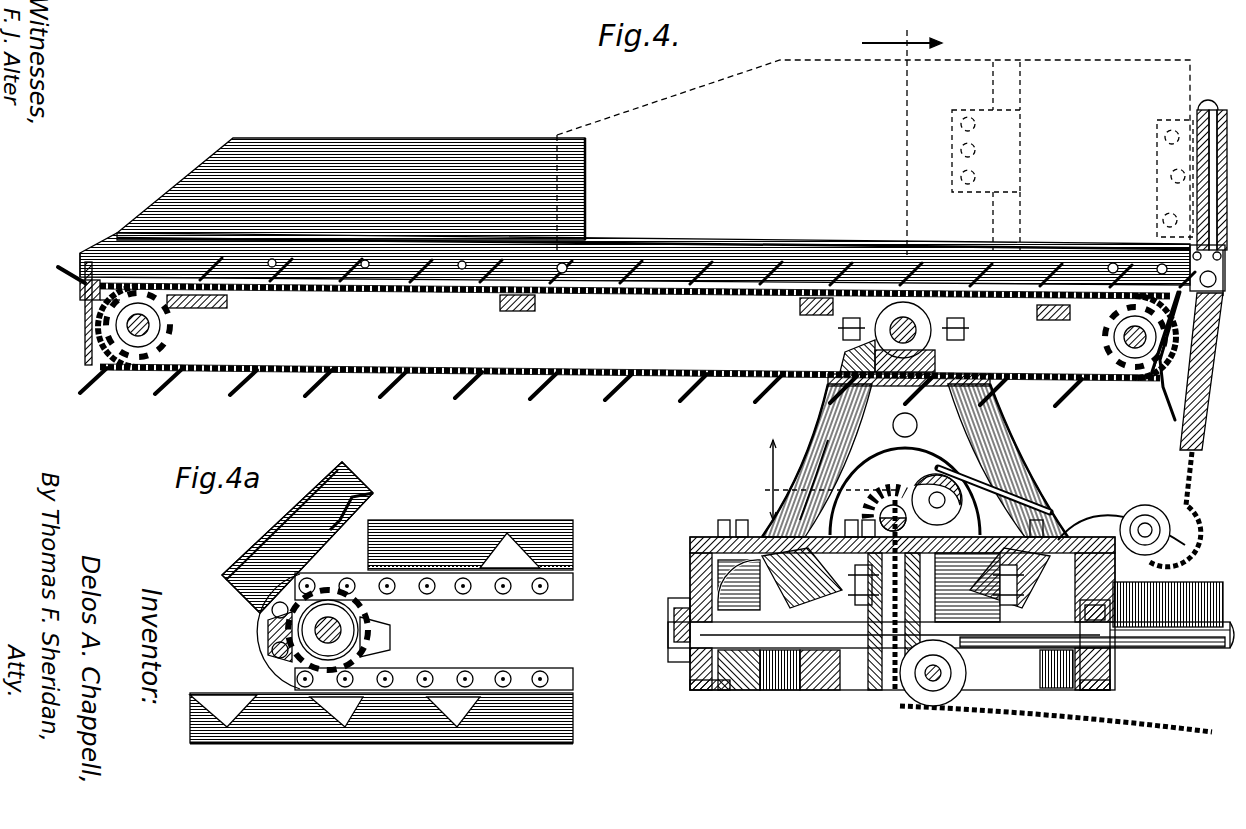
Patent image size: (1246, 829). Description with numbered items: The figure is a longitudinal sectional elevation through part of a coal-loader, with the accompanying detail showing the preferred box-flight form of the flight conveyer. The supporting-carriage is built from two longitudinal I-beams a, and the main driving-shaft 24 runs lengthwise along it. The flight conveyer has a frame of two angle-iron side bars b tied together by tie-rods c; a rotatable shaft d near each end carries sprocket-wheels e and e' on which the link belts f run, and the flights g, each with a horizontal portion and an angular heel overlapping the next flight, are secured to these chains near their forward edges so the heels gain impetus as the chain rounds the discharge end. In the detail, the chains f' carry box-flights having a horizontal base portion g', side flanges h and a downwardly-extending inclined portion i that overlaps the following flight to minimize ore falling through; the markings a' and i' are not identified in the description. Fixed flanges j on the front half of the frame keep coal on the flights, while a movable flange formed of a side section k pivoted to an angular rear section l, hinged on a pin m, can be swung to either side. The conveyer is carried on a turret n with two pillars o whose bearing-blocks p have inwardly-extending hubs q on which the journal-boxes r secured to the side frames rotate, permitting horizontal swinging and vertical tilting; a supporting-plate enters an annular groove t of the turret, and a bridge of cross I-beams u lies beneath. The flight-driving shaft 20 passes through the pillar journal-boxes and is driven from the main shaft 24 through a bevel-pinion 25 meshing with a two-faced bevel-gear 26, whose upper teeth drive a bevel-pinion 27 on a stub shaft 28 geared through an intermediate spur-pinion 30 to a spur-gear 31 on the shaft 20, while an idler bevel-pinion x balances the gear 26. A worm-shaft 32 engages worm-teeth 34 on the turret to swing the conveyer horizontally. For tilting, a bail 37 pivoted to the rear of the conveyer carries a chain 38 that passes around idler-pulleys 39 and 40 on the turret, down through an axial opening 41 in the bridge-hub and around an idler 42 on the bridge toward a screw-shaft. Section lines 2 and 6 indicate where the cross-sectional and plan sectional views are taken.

In FIG. 4, the I-beams a is at (670, 494).
In FIG. 4A, the I-beams a is at (355, 630).
In FIG. 4, the sprocket wheel a' is at (1107, 337).
In FIG. 4, the side bars b is at (128, 248).
In FIG. 4, the tie-rods c is at (228, 303).
In FIG. 4, the rotatable shaft d is at (556, 268).
In FIG. 4, the sprocket-wheel e is at (628, 330).
In FIG. 4A, the sprocket-wheel e is at (306, 637).
In FIG. 4, the sprocket-wheel e' is at (1128, 356).
In FIG. 4, the supporting-chains or link belts f is at (604, 332).
In FIG. 4A, the chains or link belts f' is at (406, 631).
In FIG. 4, the flights g is at (621, 319).
In FIG. 4A, the horizontal base portion g' is at (366, 580).
In FIG. 4A, the side flanges h is at (435, 522).
In FIG. 4A, the downwardly-extending inclined portion i is at (395, 608).
In FIG. 4A, the notches i' is at (362, 630).
In FIG. 4, the fixed flanges j is at (407, 152).
In FIG. 4, the side section k is at (776, 76).
In FIG. 4, the angular rear section l is at (1095, 76).
In FIG. 4, the pin m is at (1198, 160).
In FIG. 4, the turret n is at (690, 540).
In FIG. 4, the pillars or upwardly-extending arms o is at (830, 432).
In FIG. 4, the bearing boxes or blocks p is at (938, 362).
In FIG. 4, the inwardly-extending hubs q is at (933, 331).
In FIG. 4, the journal-boxes r is at (878, 321).
In FIG. 4, the annular groove t is at (690, 562).
In FIG. 4, the cross members or I-beams u is at (712, 690).
In FIG. 4, the idler bevel-pinion x is at (790, 650).
In FIG. 4, the section line 2 is at (902, 133).
In FIG. 4, the section line 6 is at (825, 480).
In FIG. 4, the flight-driving shaft 20 is at (915, 460).
In FIG. 4, the main driving-shaft 24 is at (1196, 650).
In FIG. 4, the bevel-pinion 25 is at (1022, 690).
In FIG. 4, the two-faced bevel-gear 26 is at (760, 660).
In FIG. 4, the bevel-pinion 27 is at (870, 512).
In FIG. 4, the stub shaft 28 is at (950, 486).
In FIG. 4, the intermediate spur-pinion 30 is at (905, 491).
In FIG. 4, the spur-gear 31 is at (852, 332).
In FIG. 4, the worm-shaft 32 is at (1182, 592).
In FIG. 4, the worm-teeth 34 is at (680, 607).
In FIG. 4, the bail 37 is at (1190, 414).
In FIG. 4, the chain 38 is at (876, 680).
In FIG. 4, the idler-pulley 39 is at (1140, 508).
In FIG. 4, the idler-pulley 40 is at (962, 500).
In FIG. 4, the axial opening 41 is at (898, 690).
In FIG. 4, the idler 42 is at (935, 707).